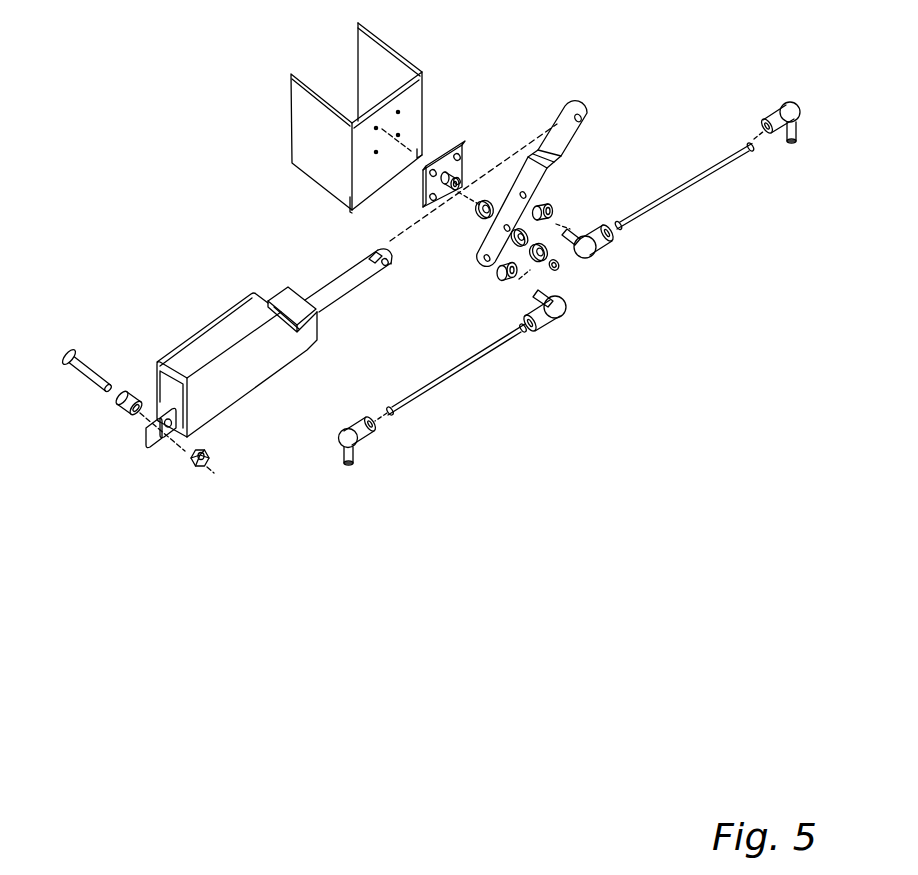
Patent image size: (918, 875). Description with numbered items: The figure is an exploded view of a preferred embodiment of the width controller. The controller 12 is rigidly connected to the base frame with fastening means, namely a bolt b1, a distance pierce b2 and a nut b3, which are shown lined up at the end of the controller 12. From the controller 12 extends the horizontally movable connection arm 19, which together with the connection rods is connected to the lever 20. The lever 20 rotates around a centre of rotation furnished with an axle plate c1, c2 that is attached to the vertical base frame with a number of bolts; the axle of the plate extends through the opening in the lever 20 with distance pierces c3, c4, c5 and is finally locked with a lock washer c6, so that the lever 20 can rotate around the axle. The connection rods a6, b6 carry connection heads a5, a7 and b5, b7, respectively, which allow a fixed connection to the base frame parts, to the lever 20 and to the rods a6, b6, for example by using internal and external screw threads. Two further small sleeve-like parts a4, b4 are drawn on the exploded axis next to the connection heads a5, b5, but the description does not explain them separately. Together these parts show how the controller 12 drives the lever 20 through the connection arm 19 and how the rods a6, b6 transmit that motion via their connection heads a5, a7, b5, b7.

The controller 12 is at (231, 358).
The connection arm 19 is at (348, 305).
The lever 20 is at (561, 170).
The spacer sleeve a4 is at (574, 193).
The connection head a5 is at (633, 257).
The rod a6 is at (693, 195).
The connection head a7 is at (787, 92).
The bolt b1 is at (72, 382).
The distance pierce b2 is at (100, 422).
The nut b3 is at (165, 478).
The spacer sleeve b4 is at (478, 282).
The connection head b5 is at (573, 328).
The rod b6 is at (479, 369).
The connection head b7 is at (377, 470).
The axle plate c1 is at (391, 111).
The axle plate c2 is at (477, 127).
The distance pierce c3 is at (517, 150).
The distance pierce c4 is at (562, 221).
The distance pierce c5 is at (502, 282).
The lock washer c6 is at (614, 296).